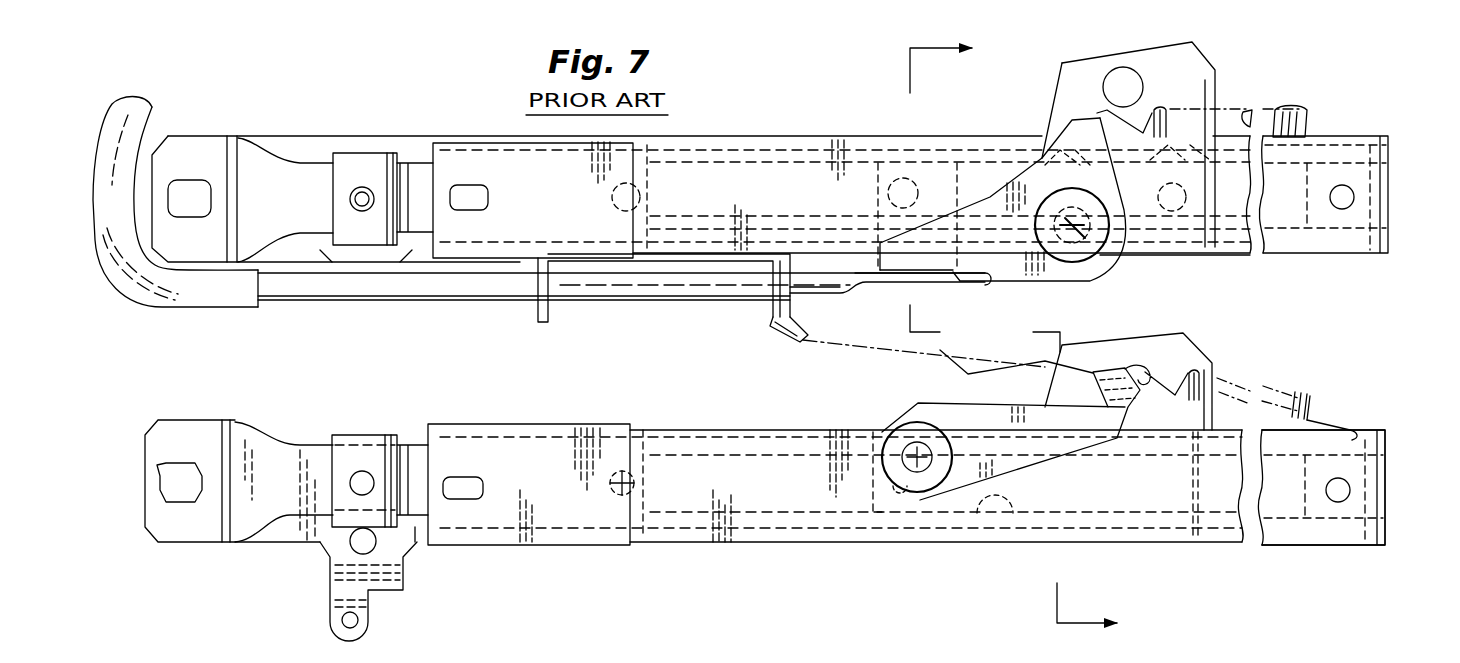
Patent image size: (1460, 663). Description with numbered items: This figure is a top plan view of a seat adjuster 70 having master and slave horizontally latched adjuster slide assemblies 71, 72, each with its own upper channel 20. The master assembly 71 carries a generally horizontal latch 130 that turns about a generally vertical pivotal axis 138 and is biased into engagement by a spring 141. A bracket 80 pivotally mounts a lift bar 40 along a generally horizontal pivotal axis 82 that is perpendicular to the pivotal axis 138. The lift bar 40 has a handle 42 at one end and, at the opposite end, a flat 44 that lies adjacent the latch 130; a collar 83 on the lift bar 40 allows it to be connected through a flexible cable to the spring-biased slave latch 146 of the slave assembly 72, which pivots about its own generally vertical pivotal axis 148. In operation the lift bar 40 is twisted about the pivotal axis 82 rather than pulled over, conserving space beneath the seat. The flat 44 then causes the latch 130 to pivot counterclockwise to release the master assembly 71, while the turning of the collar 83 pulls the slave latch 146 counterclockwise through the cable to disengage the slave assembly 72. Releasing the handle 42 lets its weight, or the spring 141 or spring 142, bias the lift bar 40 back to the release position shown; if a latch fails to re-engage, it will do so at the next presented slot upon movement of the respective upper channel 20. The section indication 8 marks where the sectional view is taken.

The seat adjuster 70 is at (296, 130).
The handle 42 is at (128, 277).
The lift bar 40 is at (346, 290).
The bracket 80 is at (535, 306).
The collar 83 is at (798, 280).
The flat 44 is at (894, 286).
The latch 130 is at (1088, 280).
The pivotal axis 138 is at (1097, 248).
The pivotal axis 82 is at (1137, 285).
The spring 141 is at (1306, 110).
The section line 8- 8 is at (975, 337).
The upper channel 20 is at (1027, 536).
The master adjuster slide assembly 71 is at (179, 657).
The slave latch 146 is at (944, 413).
The pivotal axis 148 is at (890, 435).
The spring 142 is at (1315, 395).
The slave adjuster slide assembly 72 is at (1393, 426).